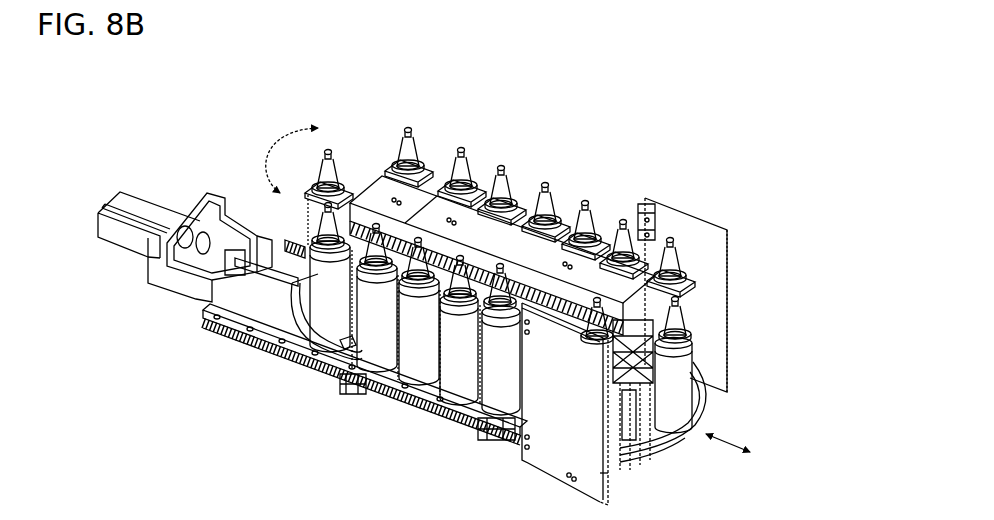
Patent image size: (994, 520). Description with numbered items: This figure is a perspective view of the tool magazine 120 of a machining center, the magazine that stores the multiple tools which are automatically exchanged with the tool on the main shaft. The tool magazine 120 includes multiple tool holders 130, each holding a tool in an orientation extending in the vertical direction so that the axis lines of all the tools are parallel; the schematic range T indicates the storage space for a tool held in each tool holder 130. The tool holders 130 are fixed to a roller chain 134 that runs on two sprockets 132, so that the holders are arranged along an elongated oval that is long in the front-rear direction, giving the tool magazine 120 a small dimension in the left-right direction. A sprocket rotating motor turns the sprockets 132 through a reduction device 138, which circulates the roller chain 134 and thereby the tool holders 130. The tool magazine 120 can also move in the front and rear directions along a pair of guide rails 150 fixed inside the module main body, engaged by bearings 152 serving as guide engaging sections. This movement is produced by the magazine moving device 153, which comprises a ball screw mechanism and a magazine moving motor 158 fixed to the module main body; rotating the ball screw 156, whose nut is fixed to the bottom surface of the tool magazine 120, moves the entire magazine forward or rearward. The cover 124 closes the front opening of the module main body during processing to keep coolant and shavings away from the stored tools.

The tool magazine 120 is at (632, 148).
The cover 124 is at (730, 217).
The tool holder 130 is at (350, 188).
The sprocket 132 is at (657, 352).
The roller chain 134 is at (657, 385).
The reduction device 138 is at (640, 407).
The guide rail 150 is at (283, 352).
The bearing 152 is at (347, 384).
The magazine moving device 153 is at (195, 172).
The ball screw 156 is at (262, 272).
The magazine moving motor 158 is at (122, 202).
The empty storage range for tools T is at (410, 370).